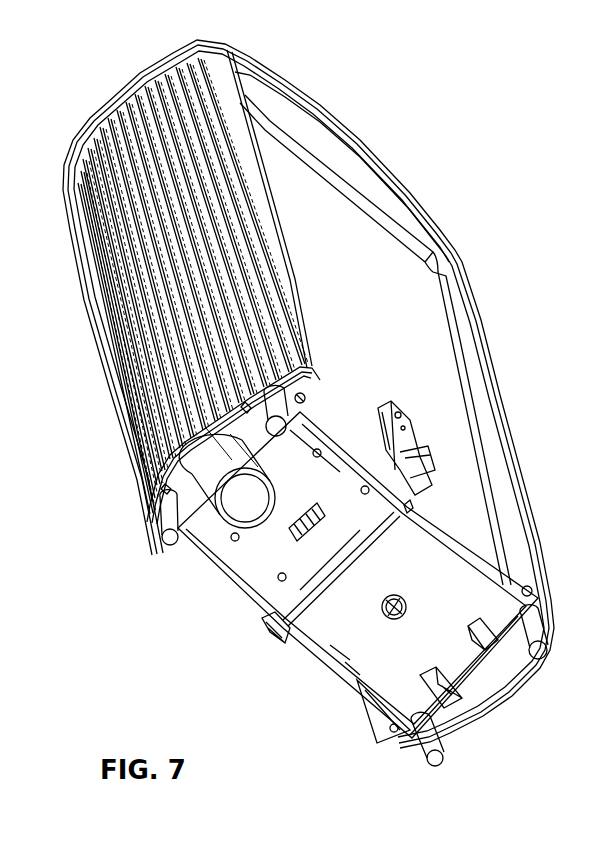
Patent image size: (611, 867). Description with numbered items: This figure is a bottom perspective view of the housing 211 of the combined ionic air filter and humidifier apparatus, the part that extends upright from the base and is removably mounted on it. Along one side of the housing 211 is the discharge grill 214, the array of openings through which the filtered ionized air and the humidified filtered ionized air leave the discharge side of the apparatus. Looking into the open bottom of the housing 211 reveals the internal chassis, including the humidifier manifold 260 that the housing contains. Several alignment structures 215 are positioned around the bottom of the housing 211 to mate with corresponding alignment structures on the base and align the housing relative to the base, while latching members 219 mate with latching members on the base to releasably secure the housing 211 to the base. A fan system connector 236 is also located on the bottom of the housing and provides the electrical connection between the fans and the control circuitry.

The housing 211 is at (413, 193).
The discharge grill 214 is at (120, 413).
The alignment structure 215 is at (164, 537).
The latching member 219 is at (427, 485).
The fan system connector 236 is at (317, 508).
The humidifier manifold 260 is at (250, 543).